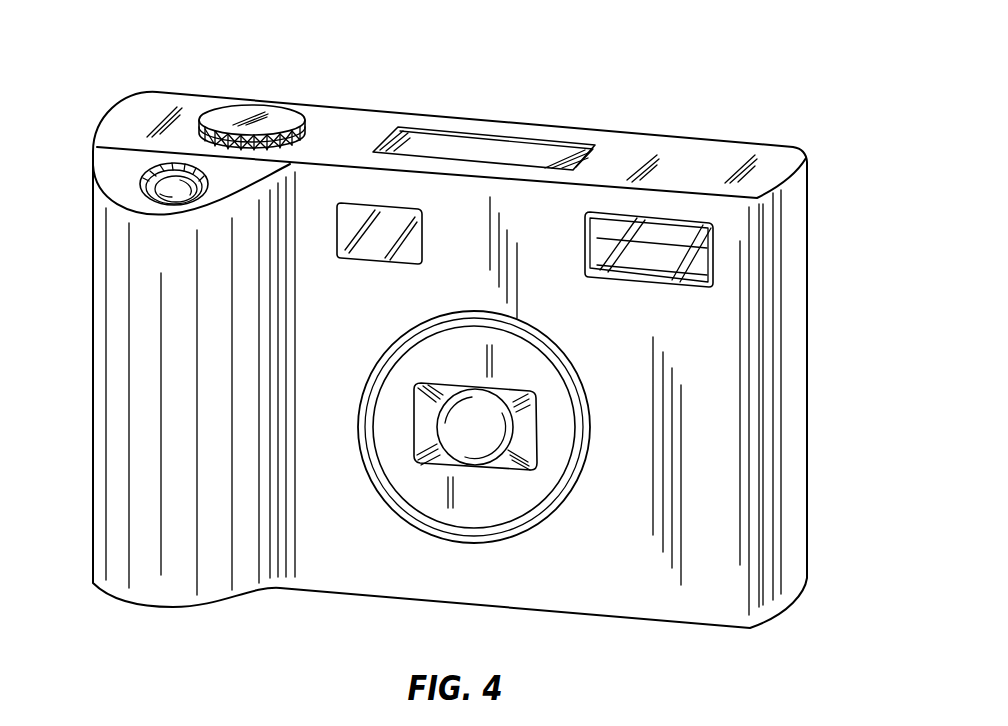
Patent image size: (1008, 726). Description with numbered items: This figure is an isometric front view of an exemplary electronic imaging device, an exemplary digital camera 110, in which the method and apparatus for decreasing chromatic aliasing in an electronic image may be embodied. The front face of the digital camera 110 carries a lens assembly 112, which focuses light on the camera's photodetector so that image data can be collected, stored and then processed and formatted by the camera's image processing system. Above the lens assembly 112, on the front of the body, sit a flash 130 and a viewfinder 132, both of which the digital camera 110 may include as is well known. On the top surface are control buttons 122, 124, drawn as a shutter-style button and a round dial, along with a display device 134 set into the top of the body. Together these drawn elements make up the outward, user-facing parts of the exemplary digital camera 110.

The digital camera 110 is at (660, 95).
The lens assembly 112 is at (538, 550).
The control button 122 is at (142, 179).
The control button 124 is at (250, 103).
The flash 130 is at (640, 284).
The viewfinder 132 is at (367, 264).
The display device 134 is at (485, 132).